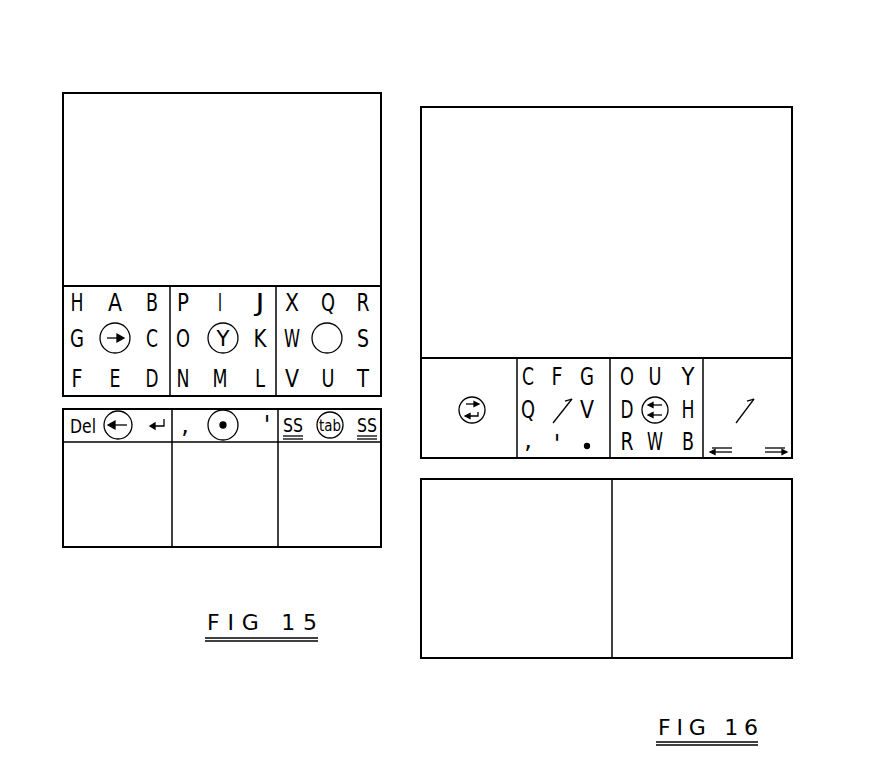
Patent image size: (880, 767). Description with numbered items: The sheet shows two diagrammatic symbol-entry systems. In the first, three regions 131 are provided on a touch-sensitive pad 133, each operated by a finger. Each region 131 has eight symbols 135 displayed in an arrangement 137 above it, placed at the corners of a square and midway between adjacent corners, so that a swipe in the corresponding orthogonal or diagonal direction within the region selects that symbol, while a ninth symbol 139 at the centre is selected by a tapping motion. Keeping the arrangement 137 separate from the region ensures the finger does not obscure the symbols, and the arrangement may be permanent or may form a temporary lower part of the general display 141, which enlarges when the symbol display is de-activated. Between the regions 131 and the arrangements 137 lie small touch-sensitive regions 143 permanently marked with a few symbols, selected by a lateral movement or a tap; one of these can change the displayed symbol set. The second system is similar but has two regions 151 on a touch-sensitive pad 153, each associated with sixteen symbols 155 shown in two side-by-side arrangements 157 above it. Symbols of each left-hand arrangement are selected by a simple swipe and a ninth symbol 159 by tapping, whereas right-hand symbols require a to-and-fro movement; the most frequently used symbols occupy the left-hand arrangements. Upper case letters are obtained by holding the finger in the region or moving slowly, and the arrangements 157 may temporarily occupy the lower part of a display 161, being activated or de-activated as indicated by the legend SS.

In FIG. 15, the region 131 is at (108, 513).
In FIG. 15, the touch-sensitive pad 133 is at (203, 557).
In FIG. 15, the symbols 135 is at (195, 288).
In FIG. 15, the arrangement 137 is at (100, 275).
In FIG. 15, the ninth symbol 139 is at (337, 323).
In FIG. 15, the display 141 is at (63, 175).
In FIG. 15, the small touch-sensitive regions 143 is at (63, 417).
In FIG. 16, the region 151 is at (478, 630).
In FIG. 16, the touch-sensitive pad 153 is at (628, 670).
In FIG. 16, the symbols 155 is at (470, 367).
In FIG. 16, the arrangements 157 is at (493, 357).
In FIG. 16, the ninth symbol 159 is at (667, 396).
In FIG. 16, the display 161 is at (645, 107).